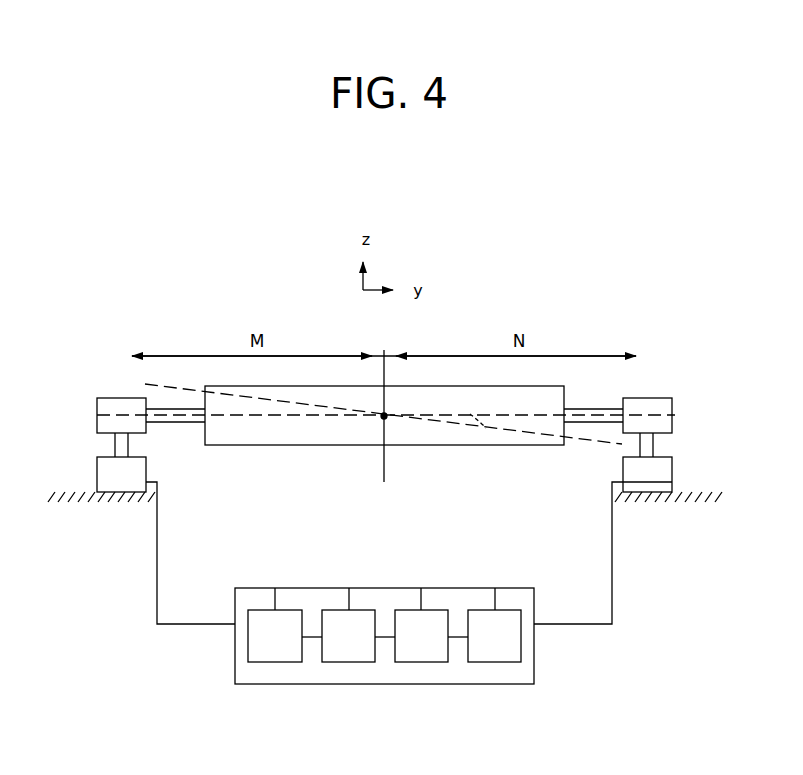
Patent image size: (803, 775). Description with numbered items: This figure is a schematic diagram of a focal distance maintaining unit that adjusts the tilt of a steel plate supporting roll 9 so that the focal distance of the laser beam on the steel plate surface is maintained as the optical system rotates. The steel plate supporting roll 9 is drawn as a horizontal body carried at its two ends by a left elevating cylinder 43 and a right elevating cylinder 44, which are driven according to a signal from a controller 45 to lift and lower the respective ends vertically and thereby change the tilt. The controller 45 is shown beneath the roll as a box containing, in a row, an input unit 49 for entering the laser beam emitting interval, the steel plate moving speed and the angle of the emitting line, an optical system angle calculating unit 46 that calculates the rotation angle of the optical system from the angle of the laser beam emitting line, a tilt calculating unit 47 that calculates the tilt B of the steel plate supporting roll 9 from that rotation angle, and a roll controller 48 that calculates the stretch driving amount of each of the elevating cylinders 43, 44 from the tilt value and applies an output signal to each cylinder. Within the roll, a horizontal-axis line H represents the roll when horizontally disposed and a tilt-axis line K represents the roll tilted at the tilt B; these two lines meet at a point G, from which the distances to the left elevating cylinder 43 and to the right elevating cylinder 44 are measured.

The steel plate supporting roll 9 is at (246, 446).
The left elevating cylinder 43 is at (97, 472).
The right elevating cylinder 44 is at (672, 472).
The controller 45 is at (384, 644).
The optical system angle calculating unit 46 is at (350, 588).
The tilt calculating unit 47 is at (422, 588).
The roll controller 48 is at (496, 588).
The input unit 49 is at (276, 588).
The point G is at (378, 421).
The tilt B is at (480, 424).
The horizontal-axis line H is at (528, 418).
The tilt-axis line K is at (490, 429).